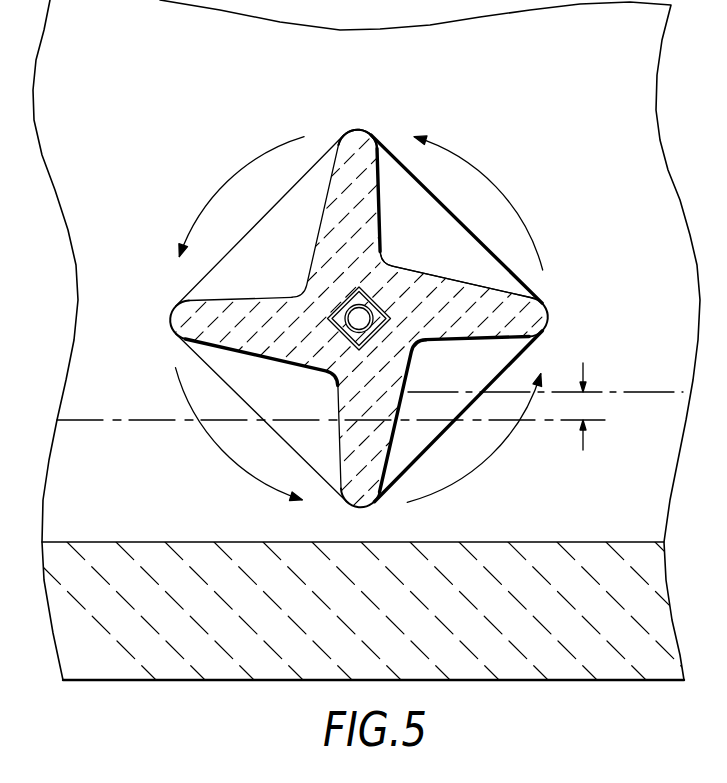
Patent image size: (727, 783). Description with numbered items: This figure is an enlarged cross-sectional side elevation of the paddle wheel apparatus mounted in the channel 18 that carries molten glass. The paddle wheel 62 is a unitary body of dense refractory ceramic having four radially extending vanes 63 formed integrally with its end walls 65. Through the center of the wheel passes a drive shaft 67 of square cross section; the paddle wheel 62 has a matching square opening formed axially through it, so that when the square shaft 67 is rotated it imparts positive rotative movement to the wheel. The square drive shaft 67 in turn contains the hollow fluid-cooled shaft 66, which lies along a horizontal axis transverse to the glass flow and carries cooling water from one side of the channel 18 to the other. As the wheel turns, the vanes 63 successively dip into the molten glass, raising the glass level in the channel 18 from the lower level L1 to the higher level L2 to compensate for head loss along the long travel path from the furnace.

The channel 18 is at (614, 670).
The paddle wheel 62 is at (561, 292).
The vanes 63 is at (356, 137).
The end walls 65 is at (398, 190).
The fluid-cooled shaft 66 is at (405, 270).
The drive shaft 67 is at (360, 294).
The glass level L1 is at (145, 418).
The glass level L2 is at (598, 390).